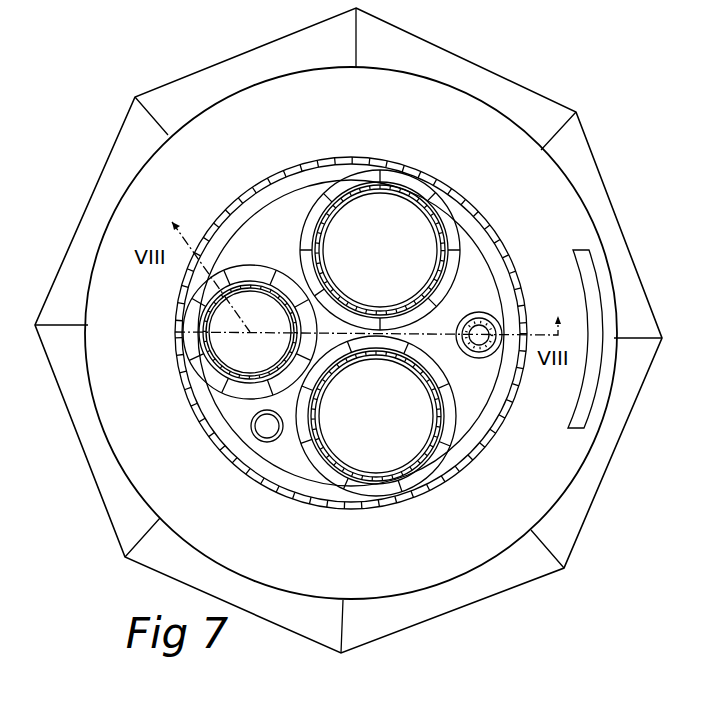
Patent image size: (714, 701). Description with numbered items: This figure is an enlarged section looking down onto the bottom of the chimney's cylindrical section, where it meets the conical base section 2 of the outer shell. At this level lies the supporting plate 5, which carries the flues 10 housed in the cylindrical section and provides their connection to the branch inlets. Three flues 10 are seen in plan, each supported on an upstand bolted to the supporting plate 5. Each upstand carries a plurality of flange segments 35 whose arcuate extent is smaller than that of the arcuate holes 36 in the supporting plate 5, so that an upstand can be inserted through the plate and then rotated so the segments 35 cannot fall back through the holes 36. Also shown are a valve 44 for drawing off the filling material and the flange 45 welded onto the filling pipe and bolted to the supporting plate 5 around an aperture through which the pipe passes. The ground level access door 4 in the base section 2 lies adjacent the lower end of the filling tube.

The conical base section 2 is at (491, 545).
The ground level access door 4 is at (581, 400).
The supporting plate 5 is at (282, 198).
The flues 10 is at (278, 368).
The flange segments 35 is at (449, 277).
The arcuate holes 36 is at (303, 258).
The valve 44 is at (252, 435).
The flange 45 is at (493, 325).